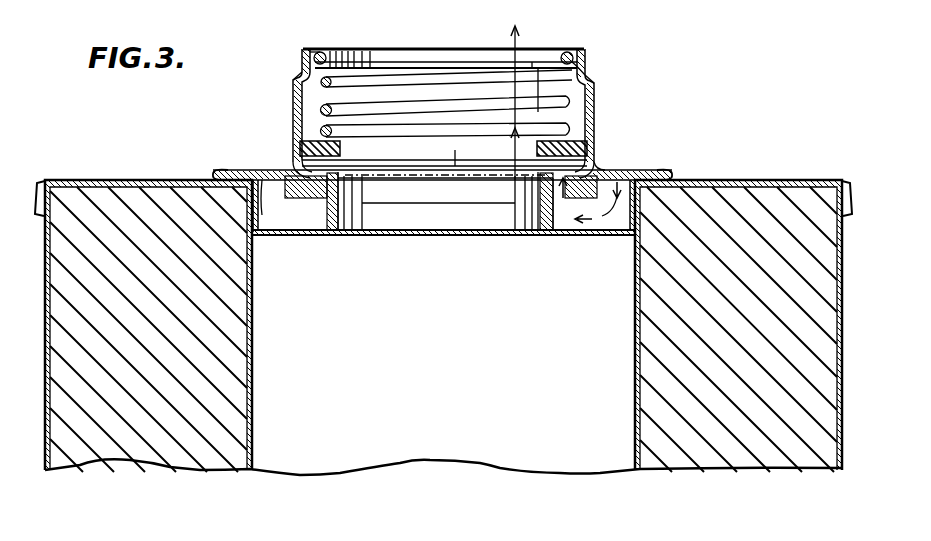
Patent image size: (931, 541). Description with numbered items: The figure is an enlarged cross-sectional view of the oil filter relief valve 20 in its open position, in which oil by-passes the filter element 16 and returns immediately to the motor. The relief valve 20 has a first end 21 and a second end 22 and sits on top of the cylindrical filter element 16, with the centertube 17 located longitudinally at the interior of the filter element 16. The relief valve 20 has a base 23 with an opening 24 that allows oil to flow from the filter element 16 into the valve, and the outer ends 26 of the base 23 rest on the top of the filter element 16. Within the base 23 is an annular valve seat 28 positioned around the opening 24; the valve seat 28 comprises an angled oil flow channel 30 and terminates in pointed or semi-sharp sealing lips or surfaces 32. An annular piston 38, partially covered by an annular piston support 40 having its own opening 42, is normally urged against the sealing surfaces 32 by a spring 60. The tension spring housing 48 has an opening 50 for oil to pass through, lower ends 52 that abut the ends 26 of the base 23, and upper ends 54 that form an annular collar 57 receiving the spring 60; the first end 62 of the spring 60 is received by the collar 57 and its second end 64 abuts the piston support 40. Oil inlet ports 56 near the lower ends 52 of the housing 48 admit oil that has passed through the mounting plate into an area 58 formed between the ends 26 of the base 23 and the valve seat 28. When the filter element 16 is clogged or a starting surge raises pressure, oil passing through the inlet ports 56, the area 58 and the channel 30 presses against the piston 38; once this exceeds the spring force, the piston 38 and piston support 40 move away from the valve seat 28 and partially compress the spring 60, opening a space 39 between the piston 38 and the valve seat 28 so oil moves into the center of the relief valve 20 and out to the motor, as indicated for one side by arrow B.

The filter element 16 is at (652, 333).
The centertube 17 is at (626, 455).
The relief valve 20 is at (483, 138).
The first end 21 is at (410, 46).
The second end 22 is at (425, 238).
The base 23 is at (292, 205).
The opening 24 is at (372, 230).
The outer ends 26 is at (234, 178).
The valve seat 28 is at (548, 232).
The angled oil flow channel 30 is at (332, 235).
The sealing lips or surfaces 32 is at (298, 156).
The piston 38 is at (578, 160).
The space 39 is at (612, 170).
The piston support 40 is at (293, 112).
The opening 42 is at (460, 145).
The tension spring housing 48 is at (600, 82).
The opening 50 is at (455, 58).
The lower ends 52 is at (228, 169).
The upper ends 54 is at (310, 52).
The oil inlet ports 56 is at (262, 172).
The annular collar 57 is at (322, 52).
The area 58 is at (266, 240).
The spring 60 is at (535, 63).
The first end 62 is at (580, 57).
The second end 64 is at (294, 84).